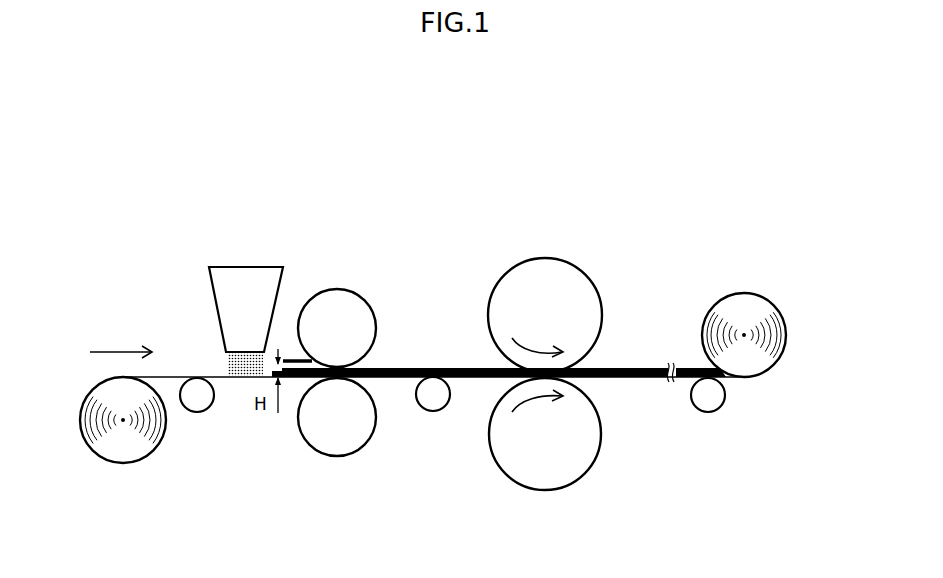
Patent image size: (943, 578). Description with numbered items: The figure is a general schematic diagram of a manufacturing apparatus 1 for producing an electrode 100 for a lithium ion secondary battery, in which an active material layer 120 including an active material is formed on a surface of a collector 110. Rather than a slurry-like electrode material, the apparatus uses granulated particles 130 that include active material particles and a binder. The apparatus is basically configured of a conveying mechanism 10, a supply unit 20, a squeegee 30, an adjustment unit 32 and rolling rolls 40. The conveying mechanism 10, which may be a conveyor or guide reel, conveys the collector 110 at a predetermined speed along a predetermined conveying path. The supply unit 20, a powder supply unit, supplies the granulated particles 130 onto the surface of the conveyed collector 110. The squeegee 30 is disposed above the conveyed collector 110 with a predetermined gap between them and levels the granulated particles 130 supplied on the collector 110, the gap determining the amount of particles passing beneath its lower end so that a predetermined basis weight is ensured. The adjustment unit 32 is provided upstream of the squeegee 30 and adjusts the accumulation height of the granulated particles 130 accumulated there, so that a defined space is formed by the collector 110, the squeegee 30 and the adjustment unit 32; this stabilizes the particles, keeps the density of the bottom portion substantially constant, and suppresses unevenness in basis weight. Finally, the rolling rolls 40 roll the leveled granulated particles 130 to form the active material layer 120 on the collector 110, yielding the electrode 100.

The manufacturing apparatus 1 is at (771, 146).
The conveying mechanism 10 is at (208, 413).
The supply unit 20 is at (227, 267).
The squeegee 30 is at (370, 303).
The adjustment unit 32 is at (290, 358).
The rolling rolls 40 is at (525, 262).
The electrode 100 is at (707, 240).
The collector 110 is at (88, 449).
The active material layer 120 is at (614, 368).
The granulated particles 130 is at (227, 375).